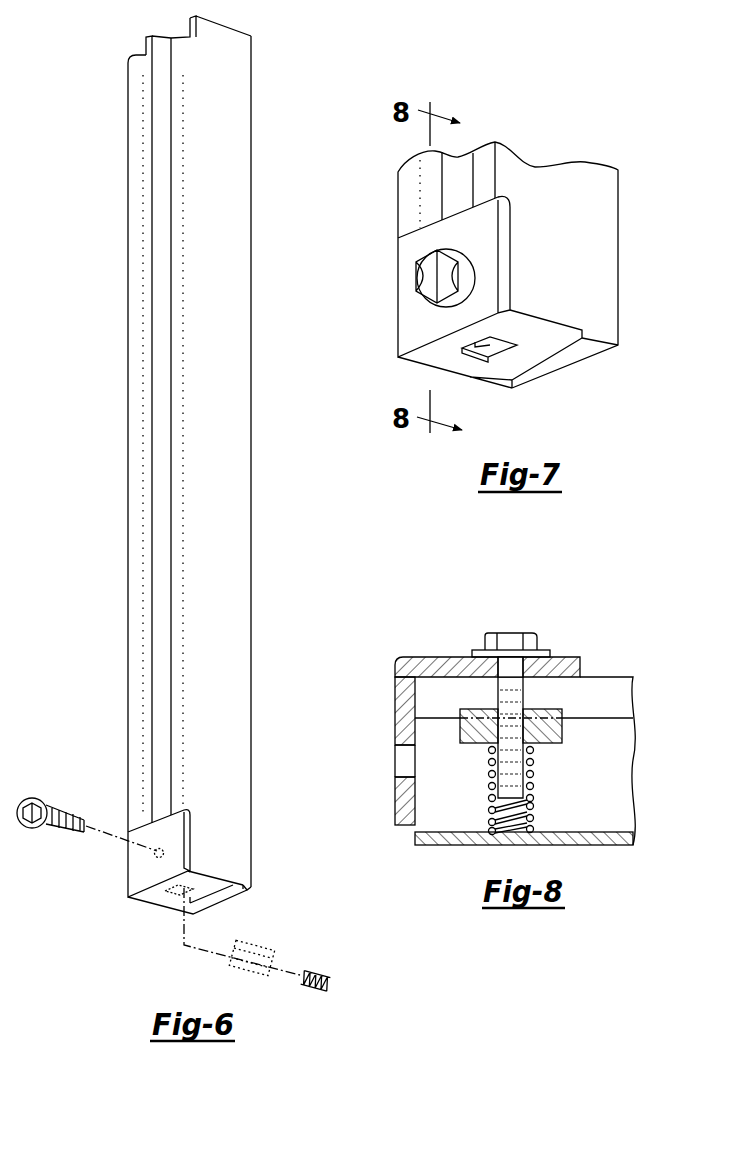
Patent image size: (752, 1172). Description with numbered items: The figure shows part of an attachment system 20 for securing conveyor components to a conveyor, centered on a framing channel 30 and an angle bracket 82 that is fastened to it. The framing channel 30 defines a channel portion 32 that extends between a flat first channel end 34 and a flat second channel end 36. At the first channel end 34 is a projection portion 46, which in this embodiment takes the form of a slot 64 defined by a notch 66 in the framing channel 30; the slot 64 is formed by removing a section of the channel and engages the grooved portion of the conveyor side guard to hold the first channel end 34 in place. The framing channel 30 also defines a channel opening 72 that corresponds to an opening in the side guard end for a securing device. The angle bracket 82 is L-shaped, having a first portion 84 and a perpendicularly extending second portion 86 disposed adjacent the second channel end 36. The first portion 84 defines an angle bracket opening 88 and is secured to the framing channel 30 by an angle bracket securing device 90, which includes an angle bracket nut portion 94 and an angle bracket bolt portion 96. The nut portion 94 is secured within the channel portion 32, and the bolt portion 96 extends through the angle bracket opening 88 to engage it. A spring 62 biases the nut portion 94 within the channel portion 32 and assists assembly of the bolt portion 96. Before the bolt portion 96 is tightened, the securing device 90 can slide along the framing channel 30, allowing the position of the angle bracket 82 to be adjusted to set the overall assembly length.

In FIG. 6, the attachment system 20 is at (88, 263).
In FIG. 6, the framing channel 30 is at (228, 98).
In FIG. 7, the framing channel 30 is at (600, 275).
In FIG. 8, the framing channel 30 is at (605, 677).
In FIG. 6, the channel portion 32 is at (175, 58).
In FIG. 7, the channel portion 32 is at (572, 345).
In FIG. 6, the first channel end 34 is at (218, 26).
In FIG. 6, the second channel end 36 is at (247, 891).
In FIG. 7, the second channel end 36 is at (600, 347).
In FIG. 8, the second channel end 36 is at (416, 836).
In FIG. 6, the projection portion 46 is at (218, 29).
In FIG. 6, the spring 62 is at (320, 972).
In FIG. 8, the spring 62 is at (532, 805).
In FIG. 6, the slot 64 is at (187, 31).
In FIG. 6, the notch 66 is at (132, 54).
In FIG. 6, the channel opening 72 is at (174, 893).
In FIG. 7, the channel opening 72 is at (490, 340).
In FIG. 8, the channel opening 72 is at (403, 762).
In FIG. 6, the angle bracket 82 is at (200, 832).
In FIG. 7, the angle bracket 82 is at (515, 232).
In FIG. 8, the angle bracket 82 is at (392, 660).
In FIG. 6, the first portion 84 is at (140, 835).
In FIG. 7, the first portion 84 is at (410, 246).
In FIG. 8, the first portion 84 is at (567, 657).
In FIG. 6, the second portion 86 is at (140, 898).
In FIG. 7, the second portion 86 is at (545, 345).
In FIG. 8, the second portion 86 is at (395, 722).
In FIG. 6, the angle bracket opening 88 is at (155, 858).
In FIG. 8, the angle bracket opening 88 is at (495, 668).
In FIG. 6, the angle bracket securing device 90 is at (38, 793).
In FIG. 7, the angle bracket securing device 90 is at (423, 305).
In FIG. 8, the angle bracket securing device 90 is at (543, 642).
In FIG. 6, the angle bracket nut portion 94 is at (272, 940).
In FIG. 8, the angle bracket nut portion 94 is at (562, 742).
In FIG. 6, the angle bracket bolt portion 96 is at (17, 813).
In FIG. 7, the angle bracket bolt portion 96 is at (425, 270).
In FIG. 8, the angle bracket bolt portion 96 is at (510, 632).